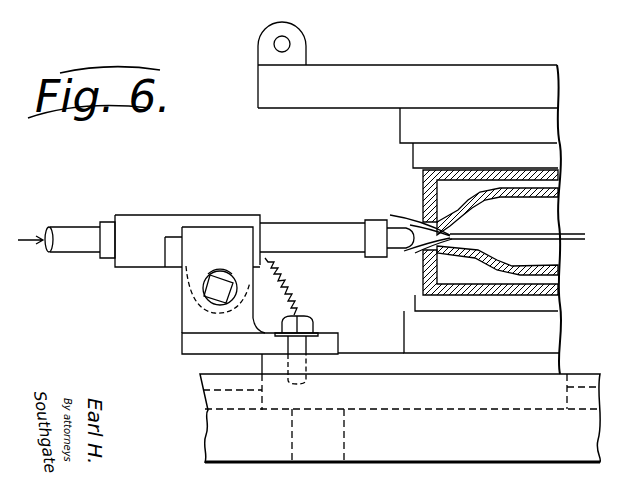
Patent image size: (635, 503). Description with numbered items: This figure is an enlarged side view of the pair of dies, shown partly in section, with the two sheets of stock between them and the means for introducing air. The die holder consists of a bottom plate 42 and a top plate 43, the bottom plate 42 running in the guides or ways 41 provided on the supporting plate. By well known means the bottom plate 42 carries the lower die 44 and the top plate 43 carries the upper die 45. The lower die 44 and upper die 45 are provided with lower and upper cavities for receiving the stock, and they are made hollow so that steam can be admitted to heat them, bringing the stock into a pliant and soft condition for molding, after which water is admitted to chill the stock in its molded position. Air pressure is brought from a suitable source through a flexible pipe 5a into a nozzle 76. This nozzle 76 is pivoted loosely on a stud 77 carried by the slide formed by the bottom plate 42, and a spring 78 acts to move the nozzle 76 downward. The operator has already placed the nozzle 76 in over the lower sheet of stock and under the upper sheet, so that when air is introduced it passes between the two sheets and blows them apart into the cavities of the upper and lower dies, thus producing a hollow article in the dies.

The guides or ways 41 is at (560, 491).
The bottom plate 42 is at (556, 363).
The top plate 43 is at (471, 63).
The lower die 44 is at (612, 289).
The upper die 45 is at (550, 207).
The pipe 5a is at (76, 243).
The nozzle 76 is at (400, 225).
The stud 77 is at (212, 288).
The spring 78 is at (289, 298).